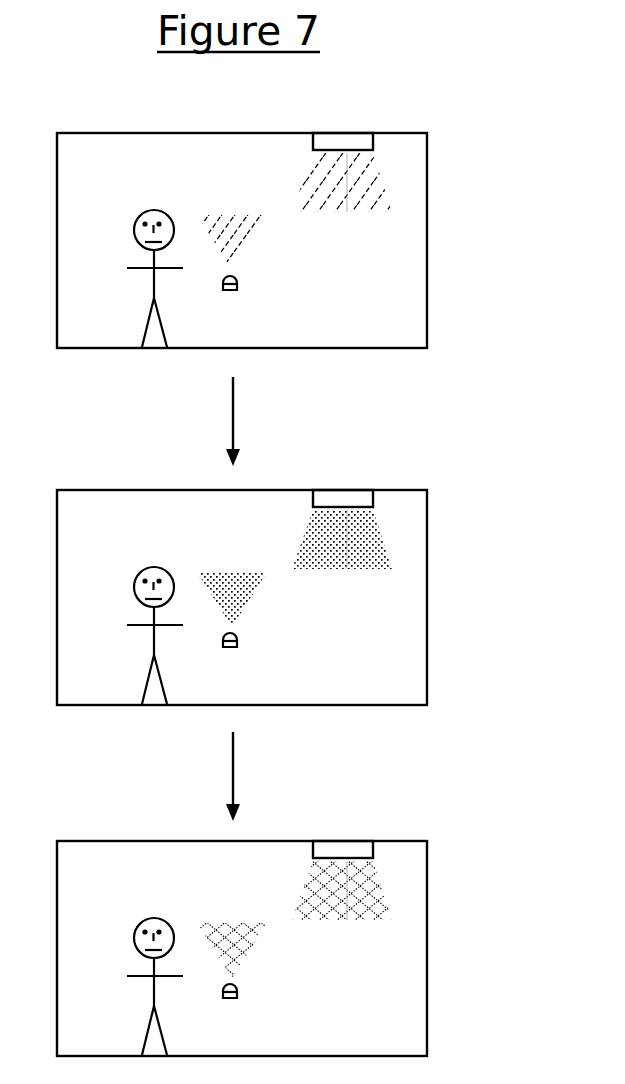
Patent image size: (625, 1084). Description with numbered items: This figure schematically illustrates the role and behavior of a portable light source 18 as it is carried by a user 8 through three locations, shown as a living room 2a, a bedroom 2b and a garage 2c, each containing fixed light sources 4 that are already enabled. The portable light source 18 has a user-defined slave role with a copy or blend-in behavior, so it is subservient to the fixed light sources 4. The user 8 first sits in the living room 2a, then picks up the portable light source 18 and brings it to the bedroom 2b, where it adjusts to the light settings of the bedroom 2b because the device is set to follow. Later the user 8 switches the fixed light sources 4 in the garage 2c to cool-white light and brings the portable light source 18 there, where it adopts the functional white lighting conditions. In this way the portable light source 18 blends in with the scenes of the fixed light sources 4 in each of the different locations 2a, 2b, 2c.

The living room 2a is at (427, 167).
The bedroom 2b is at (427, 524).
The garage 2c is at (427, 875).
The fixed light sources 4 is at (342, 490).
The user 8 is at (136, 617).
The portable light source 18 is at (271, 639).